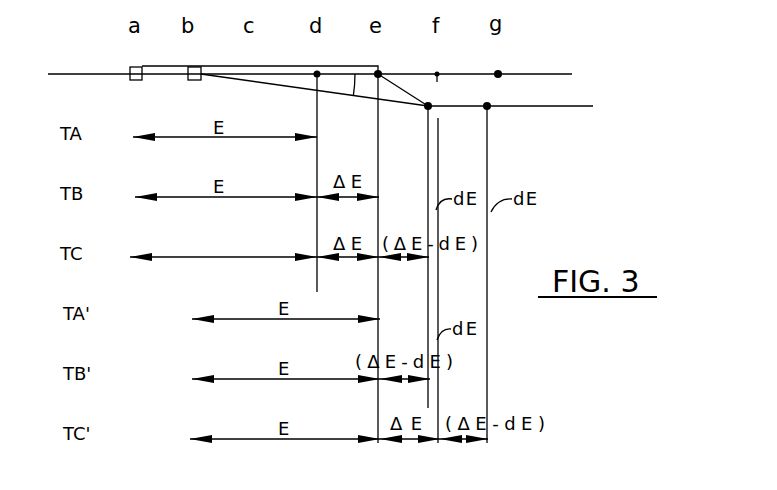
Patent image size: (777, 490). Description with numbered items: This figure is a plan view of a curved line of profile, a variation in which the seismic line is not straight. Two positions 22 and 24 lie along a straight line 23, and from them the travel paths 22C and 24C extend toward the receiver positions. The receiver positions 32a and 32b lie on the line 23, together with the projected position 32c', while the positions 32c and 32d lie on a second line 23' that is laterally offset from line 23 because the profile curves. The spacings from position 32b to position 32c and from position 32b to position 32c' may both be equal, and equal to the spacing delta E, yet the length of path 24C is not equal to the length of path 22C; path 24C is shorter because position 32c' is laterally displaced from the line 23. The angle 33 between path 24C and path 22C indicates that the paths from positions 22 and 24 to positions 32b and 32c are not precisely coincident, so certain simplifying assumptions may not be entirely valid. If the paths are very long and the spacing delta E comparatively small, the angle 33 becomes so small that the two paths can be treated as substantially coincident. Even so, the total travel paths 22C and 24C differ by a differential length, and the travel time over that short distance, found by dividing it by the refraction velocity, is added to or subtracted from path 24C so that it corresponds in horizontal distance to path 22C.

The source position 22 is at (129, 68).
The source position 24 is at (193, 67).
The travel path 22C is at (240, 66).
The travel path 24C is at (270, 86).
The line 23 is at (310, 59).
The displaced line 23' is at (514, 91).
The detector position 32a is at (317, 70).
The detector position 32b is at (378, 70).
The detector position 32c is at (455, 243).
The projected detector position 32c' is at (455, 239).
The detector position 32d is at (491, 104).
The angle 33 is at (357, 97).